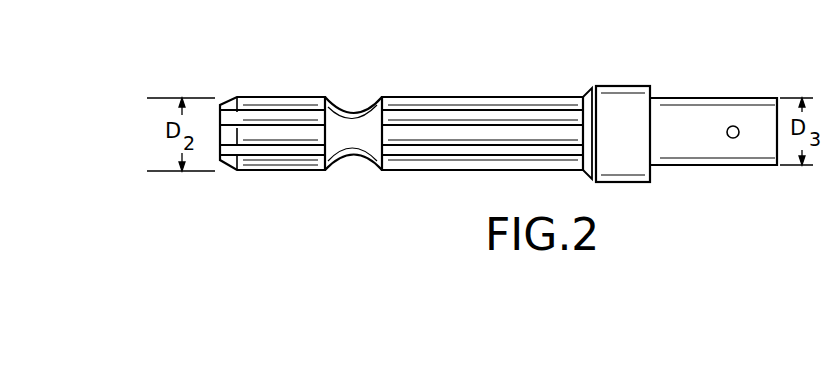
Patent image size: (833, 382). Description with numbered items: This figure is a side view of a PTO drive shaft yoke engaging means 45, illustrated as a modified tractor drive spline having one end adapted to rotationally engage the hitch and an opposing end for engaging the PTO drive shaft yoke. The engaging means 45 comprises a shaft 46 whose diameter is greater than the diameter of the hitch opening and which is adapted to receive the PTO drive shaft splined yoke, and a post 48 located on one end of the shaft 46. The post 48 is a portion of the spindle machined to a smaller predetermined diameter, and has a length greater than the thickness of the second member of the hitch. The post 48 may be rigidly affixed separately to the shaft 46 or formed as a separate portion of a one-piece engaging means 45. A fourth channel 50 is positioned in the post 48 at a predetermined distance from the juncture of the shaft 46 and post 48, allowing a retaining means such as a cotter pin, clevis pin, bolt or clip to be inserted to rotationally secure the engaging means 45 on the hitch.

The means for rotationally attaching a splined PTO drive shaft yoke 45 is at (639, 77).
The shaft 46 is at (472, 170).
The post 48 is at (707, 140).
The fourth channel 50 is at (730, 125).